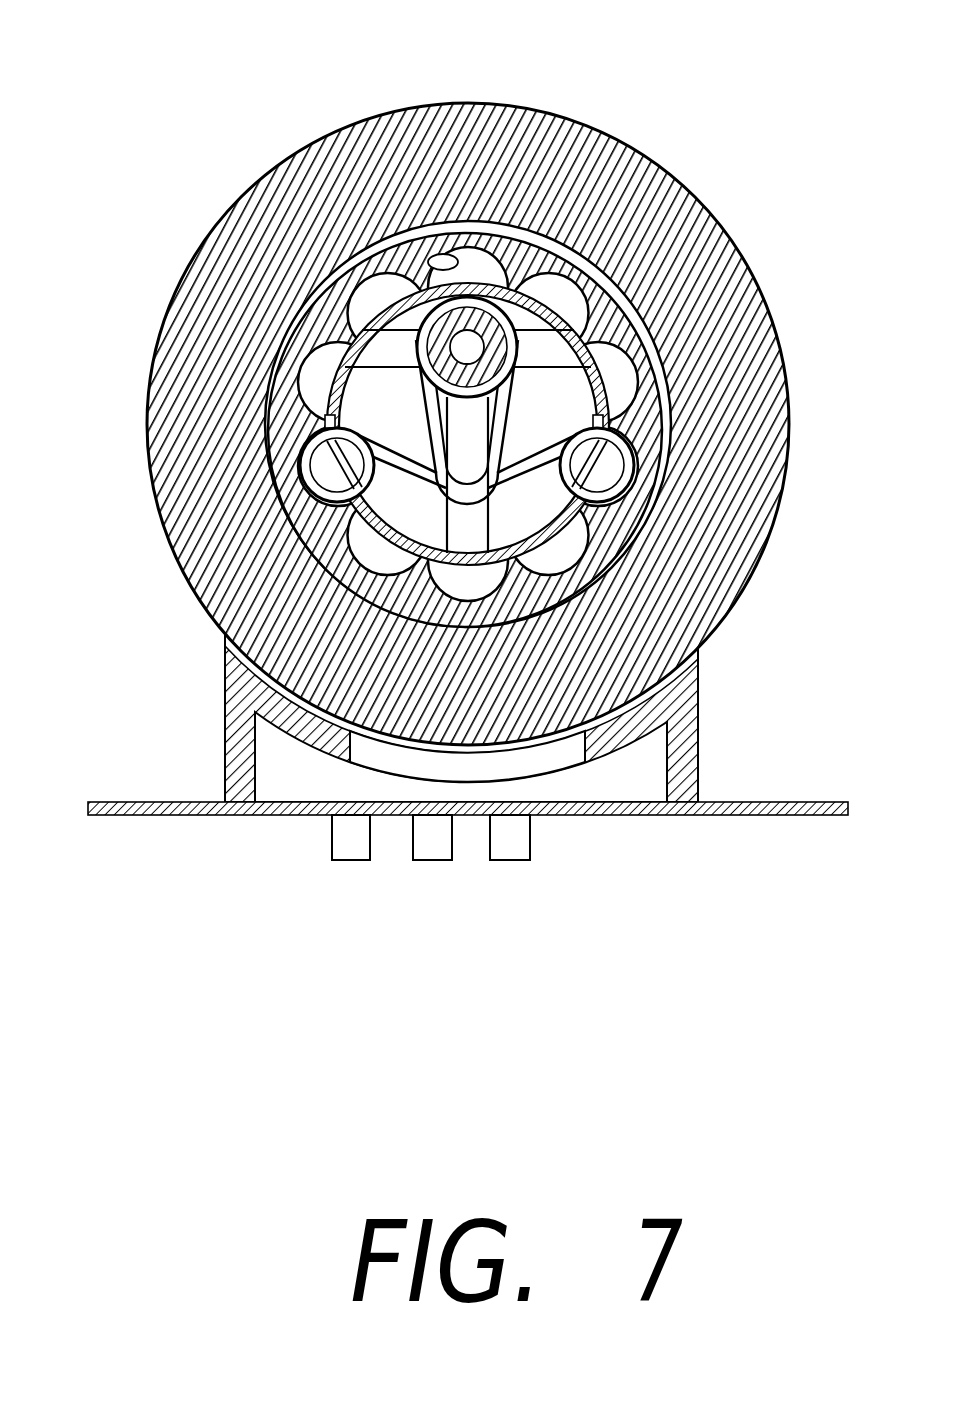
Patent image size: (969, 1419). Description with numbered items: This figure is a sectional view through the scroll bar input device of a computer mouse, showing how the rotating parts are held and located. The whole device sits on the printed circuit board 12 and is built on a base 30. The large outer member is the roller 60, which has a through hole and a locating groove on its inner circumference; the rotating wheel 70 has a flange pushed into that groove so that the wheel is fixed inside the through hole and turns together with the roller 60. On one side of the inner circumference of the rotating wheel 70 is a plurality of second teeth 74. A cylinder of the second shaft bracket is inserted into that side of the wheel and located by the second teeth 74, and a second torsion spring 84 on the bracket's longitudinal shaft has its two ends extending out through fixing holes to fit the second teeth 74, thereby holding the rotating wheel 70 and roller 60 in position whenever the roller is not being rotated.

The printed circuit board 12 is at (752, 801).
The base 30 is at (225, 700).
The roller 60 is at (202, 357).
The rotating wheel 70 is at (535, 214).
The second teeth 74 is at (447, 271).
The second torsion spring 84 is at (530, 517).